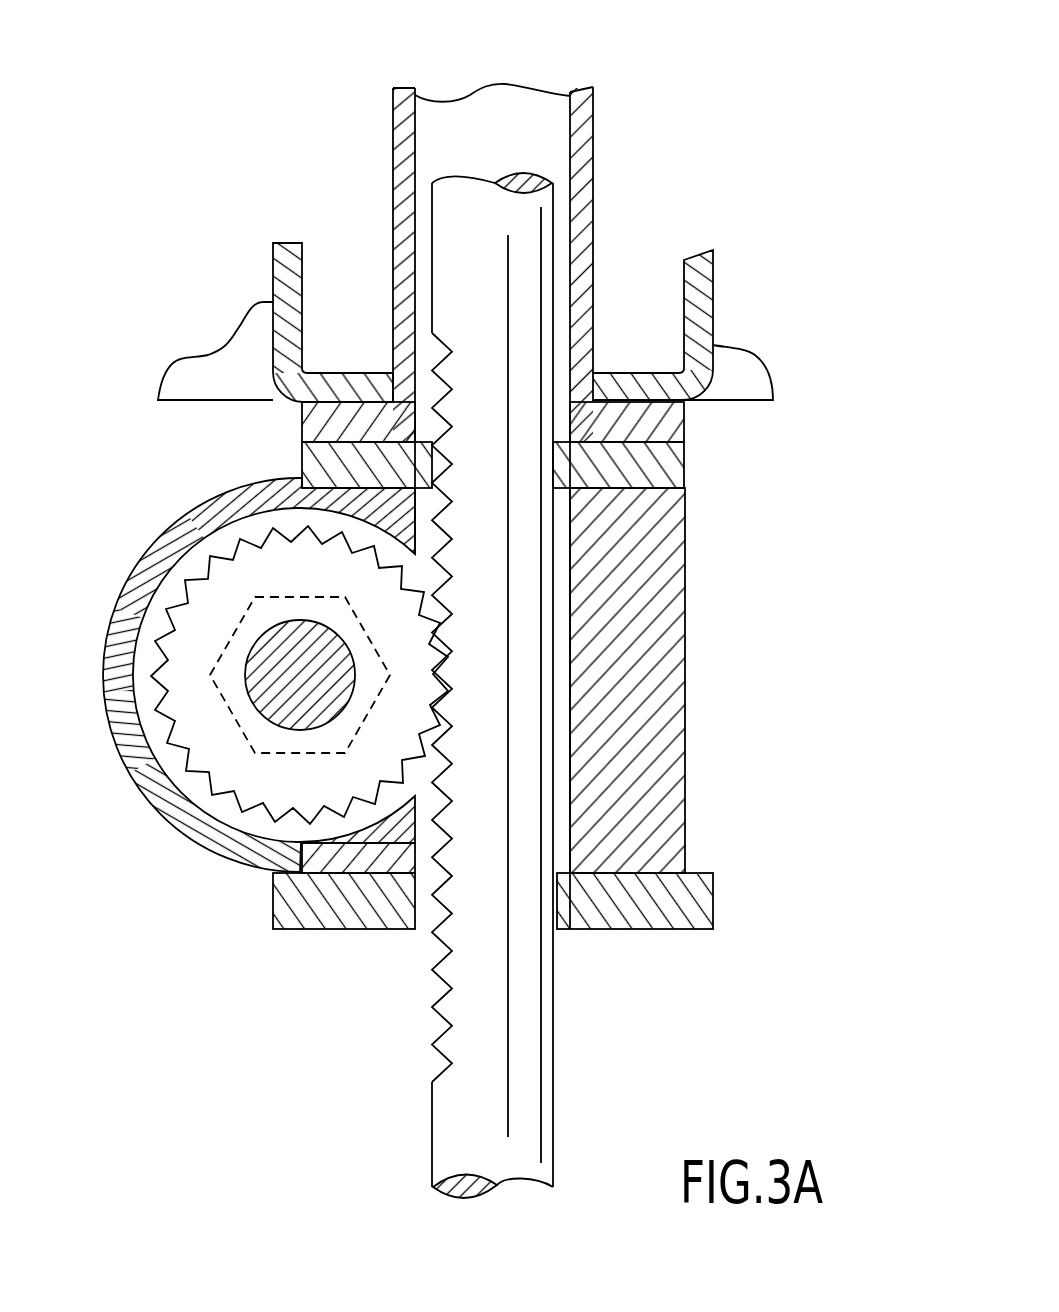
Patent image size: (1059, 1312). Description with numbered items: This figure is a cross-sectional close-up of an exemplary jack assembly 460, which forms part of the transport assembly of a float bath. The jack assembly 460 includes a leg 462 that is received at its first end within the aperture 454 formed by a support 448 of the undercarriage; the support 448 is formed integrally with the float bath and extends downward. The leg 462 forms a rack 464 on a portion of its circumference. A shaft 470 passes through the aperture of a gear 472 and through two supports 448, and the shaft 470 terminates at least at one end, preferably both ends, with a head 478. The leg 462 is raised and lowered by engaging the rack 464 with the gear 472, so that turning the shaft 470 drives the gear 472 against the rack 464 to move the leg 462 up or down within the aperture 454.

The jack assembly 460 is at (818, 153).
The leg 462 is at (477, 202).
The support 448 is at (582, 118).
The aperture 454 is at (548, 160).
The rack 464 is at (428, 392).
The shaft 470 is at (283, 690).
The gear 472 is at (386, 746).
The head 478 is at (228, 637).